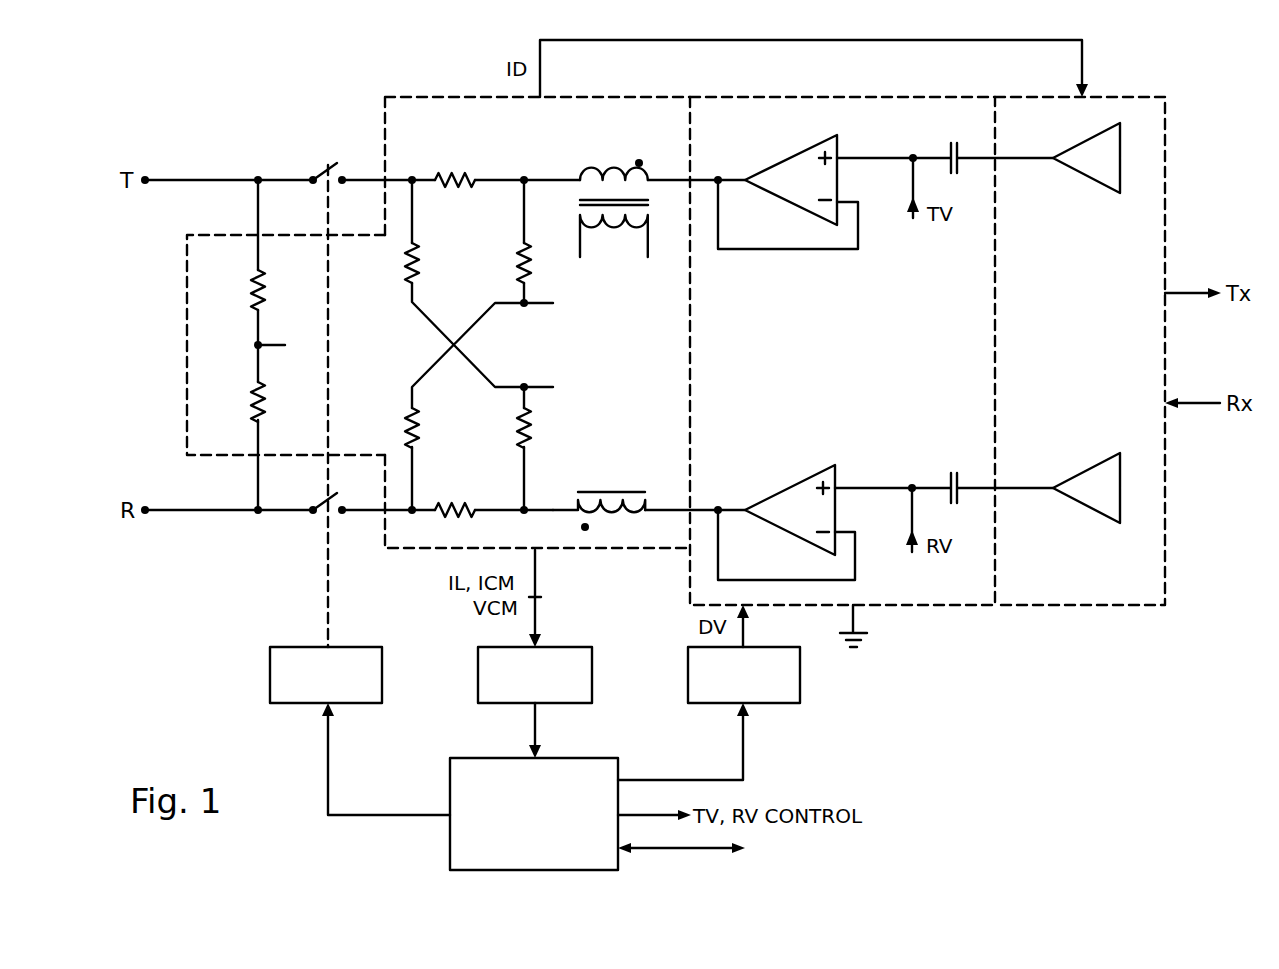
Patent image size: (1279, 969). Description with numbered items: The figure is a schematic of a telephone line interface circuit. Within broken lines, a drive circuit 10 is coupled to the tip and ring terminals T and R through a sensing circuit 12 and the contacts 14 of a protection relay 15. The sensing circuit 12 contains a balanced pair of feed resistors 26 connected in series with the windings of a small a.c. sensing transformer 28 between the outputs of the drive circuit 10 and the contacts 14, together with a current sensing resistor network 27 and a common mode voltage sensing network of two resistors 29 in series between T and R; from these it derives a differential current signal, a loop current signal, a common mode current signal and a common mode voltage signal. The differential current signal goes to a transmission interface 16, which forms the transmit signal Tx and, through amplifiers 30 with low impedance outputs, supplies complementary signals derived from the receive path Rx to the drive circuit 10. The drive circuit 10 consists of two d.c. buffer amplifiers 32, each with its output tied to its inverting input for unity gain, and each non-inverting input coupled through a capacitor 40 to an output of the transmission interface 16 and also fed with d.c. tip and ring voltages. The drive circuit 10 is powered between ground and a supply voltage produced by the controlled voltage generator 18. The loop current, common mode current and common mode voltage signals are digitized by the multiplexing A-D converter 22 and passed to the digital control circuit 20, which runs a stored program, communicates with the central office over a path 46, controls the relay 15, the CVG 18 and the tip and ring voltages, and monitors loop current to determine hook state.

The drive circuit 10 is at (932, 596).
The sensing circuit 12 is at (415, 543).
The contacts 14 is at (322, 170).
The protection relay 15 is at (271, 676).
The transmission interface 16 is at (1043, 596).
The controlled voltage generator 18 is at (690, 676).
The digital control circuit 20 is at (476, 766).
The multiplexing analog-to-digital converter 22 is at (480, 676).
The feed resistors 26 is at (450, 178).
The current sensing resistor network 27 is at (471, 308).
The a.c. sensing transformer 28 is at (597, 176).
The resistors 29 is at (246, 392).
The amplifiers 30 is at (1088, 167).
The d.c. buffer amplifiers 32 is at (783, 173).
The capacitor 40 is at (950, 151).
The path 46 is at (662, 849).